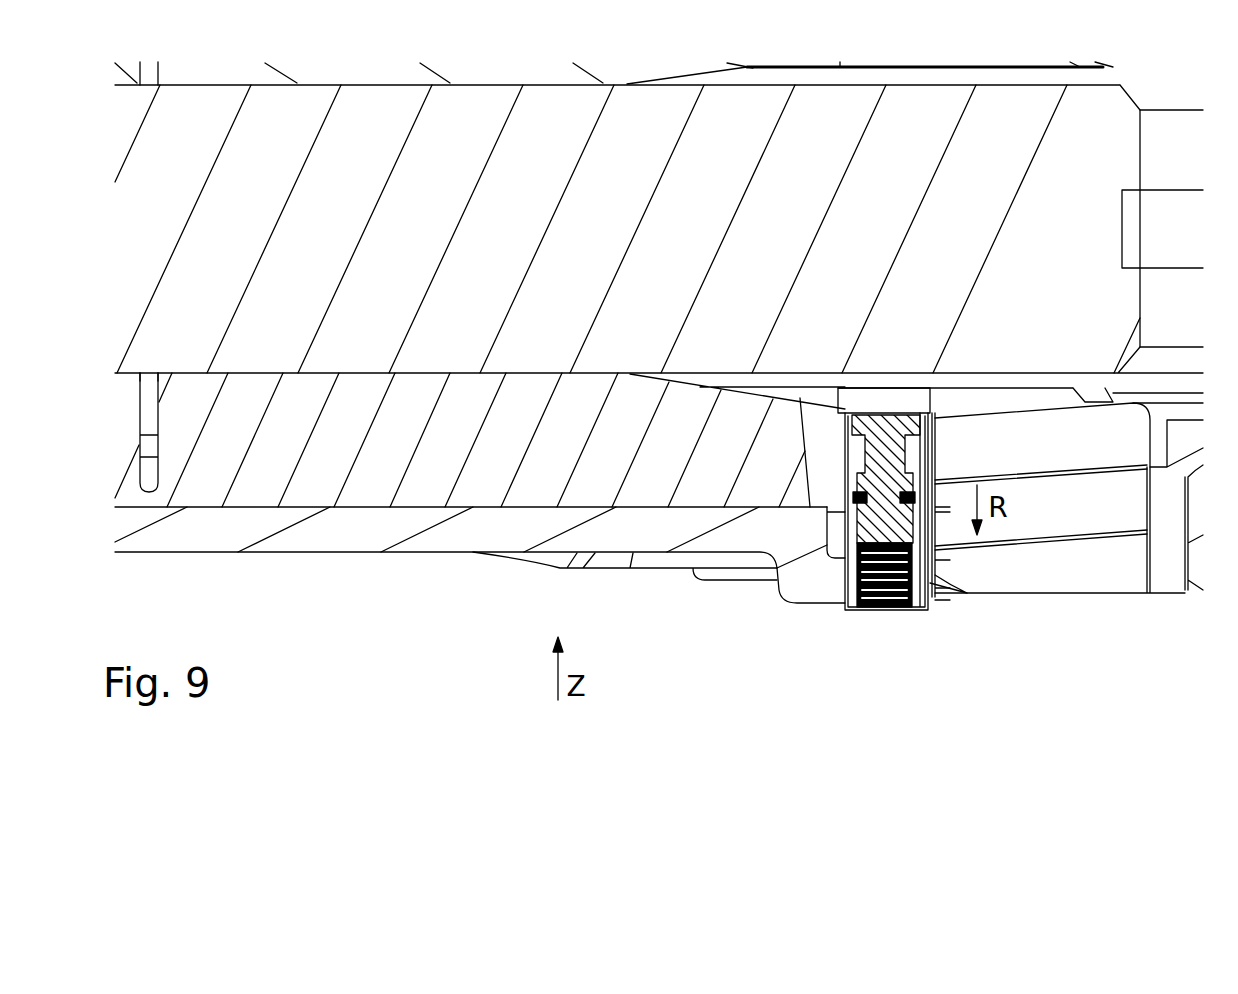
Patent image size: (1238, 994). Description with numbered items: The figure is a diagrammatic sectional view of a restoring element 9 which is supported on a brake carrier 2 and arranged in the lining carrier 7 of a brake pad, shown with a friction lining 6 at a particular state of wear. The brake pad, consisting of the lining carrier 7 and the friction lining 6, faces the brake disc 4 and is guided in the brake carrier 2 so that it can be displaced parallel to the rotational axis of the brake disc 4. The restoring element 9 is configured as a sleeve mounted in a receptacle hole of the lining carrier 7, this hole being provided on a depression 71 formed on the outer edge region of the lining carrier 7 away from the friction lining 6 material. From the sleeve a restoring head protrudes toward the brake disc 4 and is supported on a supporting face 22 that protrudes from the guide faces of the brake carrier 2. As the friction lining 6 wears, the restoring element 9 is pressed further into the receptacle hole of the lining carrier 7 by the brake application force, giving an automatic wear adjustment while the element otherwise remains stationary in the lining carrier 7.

The brake carrier 2 is at (1100, 577).
The brake disc 4 is at (300, 300).
The friction lining 6 is at (378, 483).
The lining carrier 7 is at (433, 538).
The restoring element 9 is at (918, 622).
The supporting face 22 is at (855, 405).
The depression 71 is at (825, 588).